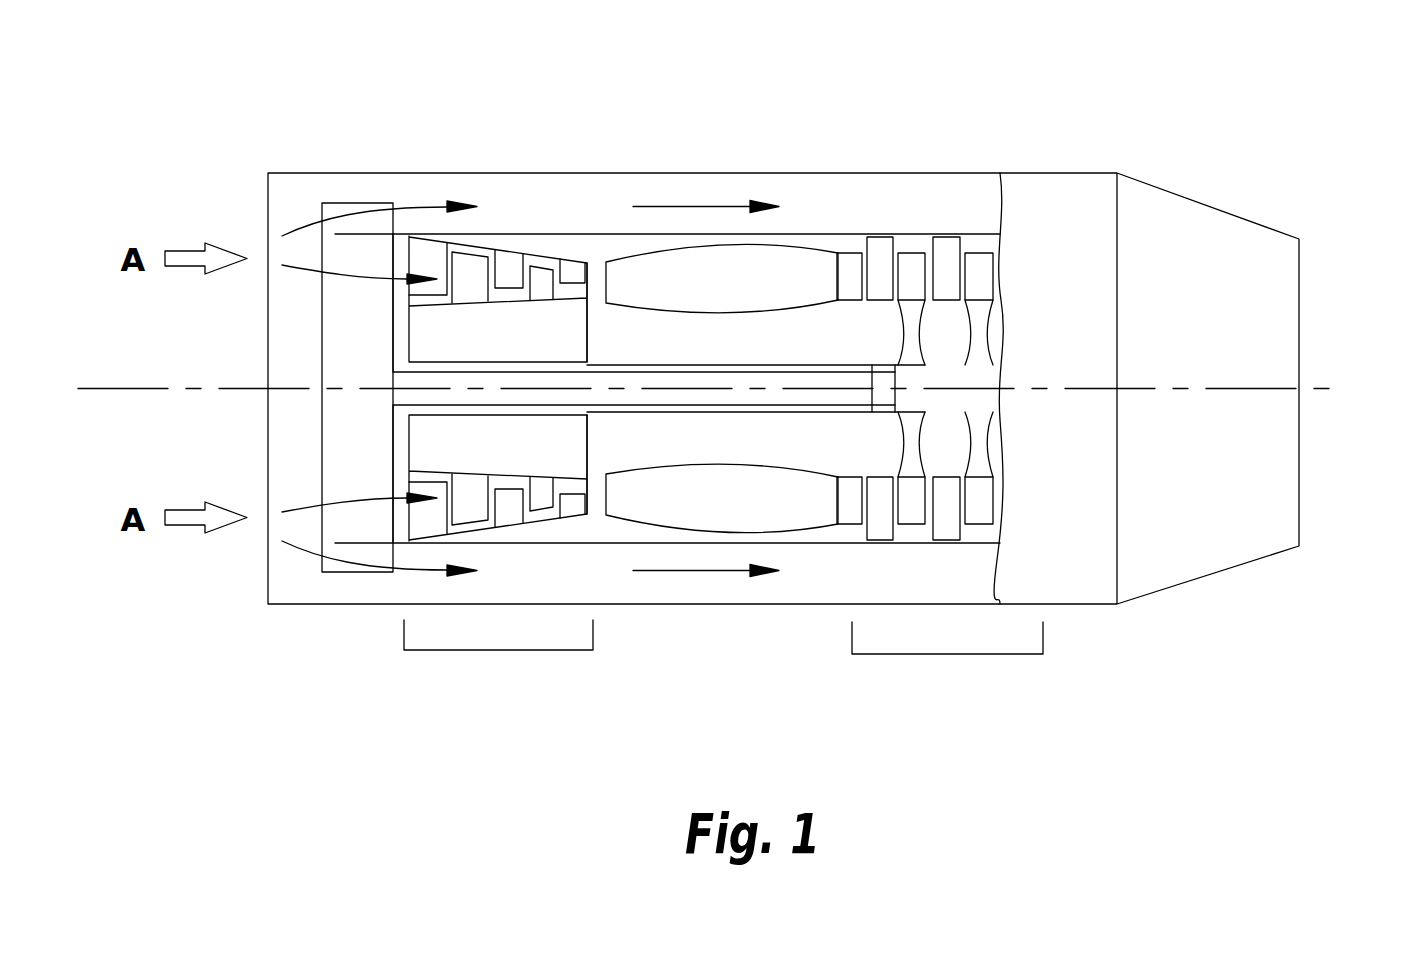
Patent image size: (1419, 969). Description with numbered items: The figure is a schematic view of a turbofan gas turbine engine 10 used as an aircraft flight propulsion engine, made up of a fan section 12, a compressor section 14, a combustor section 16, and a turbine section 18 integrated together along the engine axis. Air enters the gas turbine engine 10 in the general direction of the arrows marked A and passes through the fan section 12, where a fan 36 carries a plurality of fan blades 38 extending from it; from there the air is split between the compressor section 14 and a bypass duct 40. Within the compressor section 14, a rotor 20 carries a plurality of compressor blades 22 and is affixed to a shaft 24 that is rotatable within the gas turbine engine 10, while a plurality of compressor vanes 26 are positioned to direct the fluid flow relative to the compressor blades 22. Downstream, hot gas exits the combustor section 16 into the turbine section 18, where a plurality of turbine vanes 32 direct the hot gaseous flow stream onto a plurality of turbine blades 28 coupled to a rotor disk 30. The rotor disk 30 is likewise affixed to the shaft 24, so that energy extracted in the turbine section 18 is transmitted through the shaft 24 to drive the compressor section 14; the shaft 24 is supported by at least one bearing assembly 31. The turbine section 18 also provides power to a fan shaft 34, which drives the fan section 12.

The gas turbine engine 10 is at (951, 101).
The fan section 12 is at (343, 572).
The compressor section 14 is at (473, 652).
The combustor section 16 is at (737, 234).
The turbine section 18 is at (1005, 655).
The rotor 20 is at (428, 343).
The compressor blades 22 is at (545, 270).
The shaft 24 is at (672, 416).
The compressor vanes 26 is at (423, 245).
The turbine blades 28 is at (913, 517).
The rotor disk 30 is at (915, 448).
The bearing assembly 31 is at (895, 380).
The turbine vanes 32 is at (948, 258).
The fan shaft 34 is at (587, 373).
The fan 36 is at (338, 450).
The fan blades 38 is at (333, 245).
The bypass duct 40 is at (415, 587).